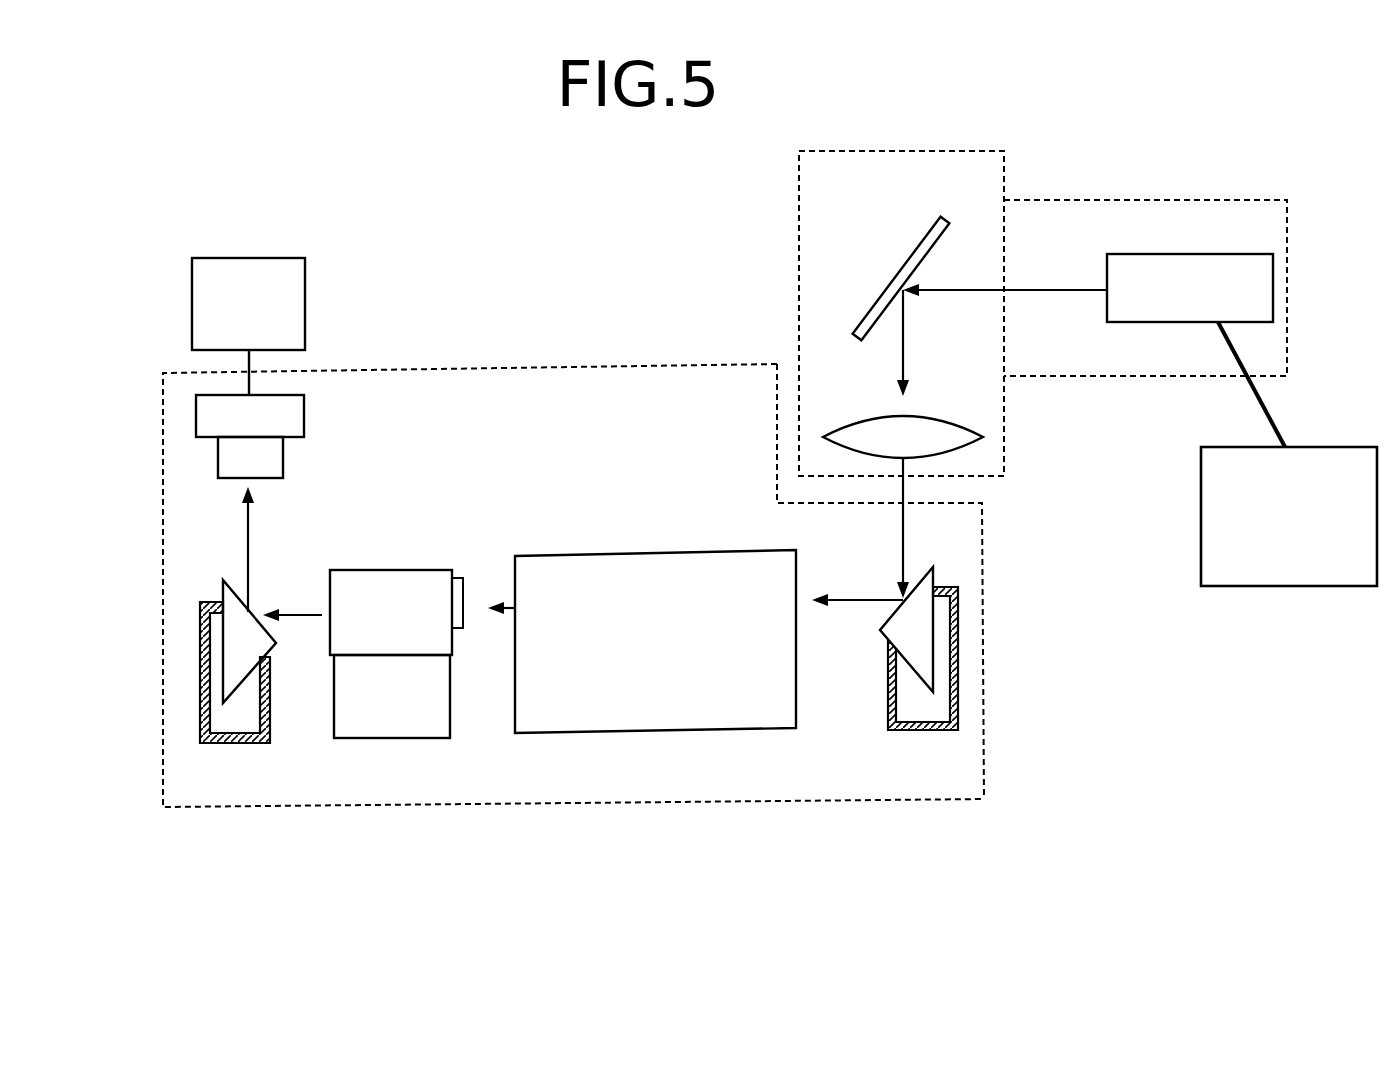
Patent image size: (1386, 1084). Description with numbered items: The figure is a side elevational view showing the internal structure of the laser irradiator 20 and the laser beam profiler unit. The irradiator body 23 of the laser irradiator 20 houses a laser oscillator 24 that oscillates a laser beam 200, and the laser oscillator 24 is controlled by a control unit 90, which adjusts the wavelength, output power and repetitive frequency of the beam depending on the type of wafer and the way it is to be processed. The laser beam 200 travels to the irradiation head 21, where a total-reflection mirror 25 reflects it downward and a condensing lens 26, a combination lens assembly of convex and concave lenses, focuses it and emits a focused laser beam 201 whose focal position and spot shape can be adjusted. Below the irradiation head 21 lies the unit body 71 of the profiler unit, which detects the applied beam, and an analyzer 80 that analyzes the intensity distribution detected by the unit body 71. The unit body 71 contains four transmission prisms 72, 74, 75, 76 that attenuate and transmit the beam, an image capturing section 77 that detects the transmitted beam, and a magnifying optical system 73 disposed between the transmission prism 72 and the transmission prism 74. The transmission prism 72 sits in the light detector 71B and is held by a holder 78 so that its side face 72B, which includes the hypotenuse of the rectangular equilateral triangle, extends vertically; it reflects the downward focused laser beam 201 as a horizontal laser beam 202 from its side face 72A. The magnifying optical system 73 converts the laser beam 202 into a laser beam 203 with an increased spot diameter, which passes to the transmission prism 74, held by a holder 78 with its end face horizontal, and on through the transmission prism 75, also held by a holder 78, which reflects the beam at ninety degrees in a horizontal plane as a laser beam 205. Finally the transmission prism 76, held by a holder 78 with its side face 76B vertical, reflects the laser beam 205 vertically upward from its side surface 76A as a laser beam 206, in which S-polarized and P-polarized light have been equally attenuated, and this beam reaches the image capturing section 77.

The laser irradiator 20 is at (1049, 162).
The irradiation head 21 is at (898, 150).
The irradiator body 23 is at (1142, 199).
The laser oscillator 24 is at (1188, 253).
The total-reflection mirror 25 is at (895, 272).
The condensing lens 26 is at (864, 426).
The laser beam 200 is at (1058, 289).
The focused laser beam 201 is at (902, 527).
The laser beam 202 is at (846, 599).
The laser beam 203 is at (503, 605).
The laser beam 205 is at (294, 609).
The laser beam 206 is at (250, 511).
The unit body 71 is at (461, 369).
The light detector 71B is at (984, 512).
The transmission prism 72 is at (922, 644).
The side face 72A is at (882, 618).
The side face 72B is at (935, 615).
The magnifying optical system 73 is at (658, 730).
The transmission prism 74 is at (455, 635).
The transmission prism 75 is at (479, 723).
The transmission prism 76 is at (230, 645).
The side surface 76A is at (230, 584).
The side face 76B is at (226, 690).
The image capturing section 77 is at (295, 413).
The holder 78 is at (957, 677).
The analyzer 80 is at (306, 300).
The control unit 90 is at (1326, 446).